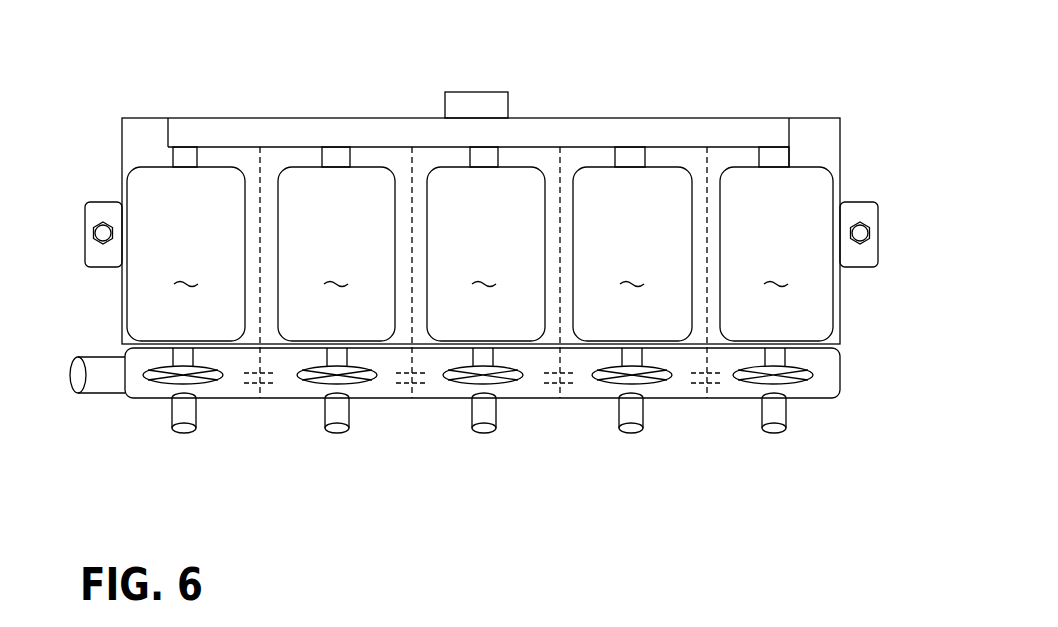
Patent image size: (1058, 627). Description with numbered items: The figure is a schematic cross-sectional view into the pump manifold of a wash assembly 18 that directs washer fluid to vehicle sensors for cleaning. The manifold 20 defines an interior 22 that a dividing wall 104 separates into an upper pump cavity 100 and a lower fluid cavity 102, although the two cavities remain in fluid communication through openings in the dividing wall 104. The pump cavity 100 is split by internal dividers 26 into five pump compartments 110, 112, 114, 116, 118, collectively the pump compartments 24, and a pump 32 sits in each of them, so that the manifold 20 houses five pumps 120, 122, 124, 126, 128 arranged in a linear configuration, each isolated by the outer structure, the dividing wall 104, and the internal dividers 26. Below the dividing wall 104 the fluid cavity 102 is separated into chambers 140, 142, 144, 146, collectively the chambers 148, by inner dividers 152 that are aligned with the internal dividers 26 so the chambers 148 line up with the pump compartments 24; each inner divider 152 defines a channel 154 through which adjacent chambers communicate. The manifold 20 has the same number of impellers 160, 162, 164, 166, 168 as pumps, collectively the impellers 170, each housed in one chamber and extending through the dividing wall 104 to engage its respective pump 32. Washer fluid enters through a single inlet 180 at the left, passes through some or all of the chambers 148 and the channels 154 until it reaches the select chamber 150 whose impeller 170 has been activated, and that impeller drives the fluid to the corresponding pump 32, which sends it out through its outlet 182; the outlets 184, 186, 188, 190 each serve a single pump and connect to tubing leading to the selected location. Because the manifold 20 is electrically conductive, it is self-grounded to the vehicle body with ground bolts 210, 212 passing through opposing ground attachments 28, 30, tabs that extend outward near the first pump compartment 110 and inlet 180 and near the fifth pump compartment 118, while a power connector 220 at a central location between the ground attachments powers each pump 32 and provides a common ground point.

The wash assembly 18 is at (836, 70).
The manifold 20 is at (124, 116).
The interior 22 is at (182, 157).
The pump compartments 24 is at (776, 146).
The internal dividers 26 is at (262, 165).
The first ground attachment 28 is at (97, 258).
The second ground attachment 30 is at (875, 262).
The pump 32 is at (838, 175).
The pump cavity 100 is at (840, 341).
The fluid cavity 102 is at (837, 380).
The dividing wall 104 is at (148, 342).
The first pump compartment 110 is at (241, 157).
The second pump compartment 112 is at (373, 157).
The third pump compartment 114 is at (532, 155).
The fourth pump compartment 116 is at (670, 158).
The fifth pump compartment 118 is at (730, 157).
The first pump 120 is at (186, 254).
The second pump 122 is at (336, 254).
The third pump 124 is at (486, 254).
The fourth pump 126 is at (632, 254).
The fifth pump 128 is at (776, 254).
The first chamber 140 is at (247, 392).
The second chamber 142 is at (401, 392).
The third chamber 144 is at (551, 392).
The fourth chamber 146 is at (694, 392).
The chambers 148 is at (822, 390).
The select chamber 150 is at (845, 401).
The inner dividers 152 is at (262, 378).
The channel 154 is at (244, 378).
The first impeller 160 is at (157, 381).
The second impeller 162 is at (311, 381).
The third impeller 164 is at (457, 381).
The fourth impeller 166 is at (606, 381).
The fifth impeller 168 is at (747, 381).
The impellers 170 is at (824, 374).
The inlet 180 is at (78, 378).
The outlets 182 is at (185, 430).
The first outlet 184 is at (339, 430).
The second outlet 186 is at (485, 430).
The third outlet 188 is at (634, 430).
The fourth outlet 190 is at (777, 430).
The first ground bolt 210 is at (97, 230).
The second ground bolt 212 is at (866, 228).
The power connector 220 is at (463, 92).